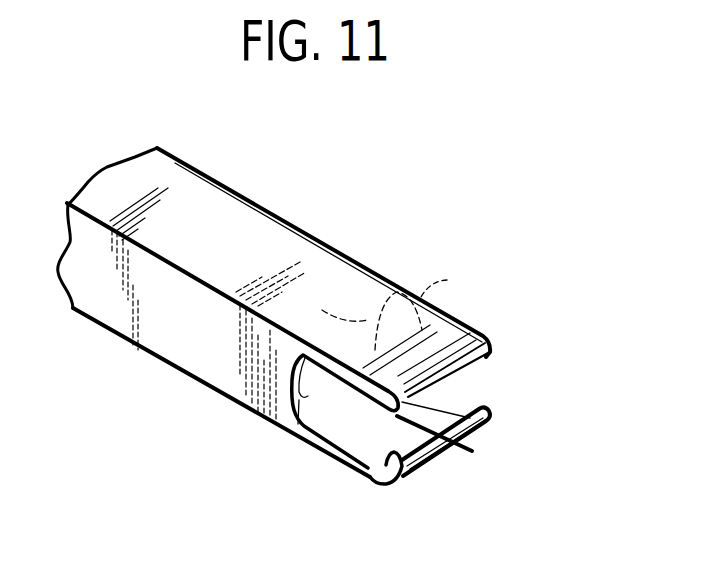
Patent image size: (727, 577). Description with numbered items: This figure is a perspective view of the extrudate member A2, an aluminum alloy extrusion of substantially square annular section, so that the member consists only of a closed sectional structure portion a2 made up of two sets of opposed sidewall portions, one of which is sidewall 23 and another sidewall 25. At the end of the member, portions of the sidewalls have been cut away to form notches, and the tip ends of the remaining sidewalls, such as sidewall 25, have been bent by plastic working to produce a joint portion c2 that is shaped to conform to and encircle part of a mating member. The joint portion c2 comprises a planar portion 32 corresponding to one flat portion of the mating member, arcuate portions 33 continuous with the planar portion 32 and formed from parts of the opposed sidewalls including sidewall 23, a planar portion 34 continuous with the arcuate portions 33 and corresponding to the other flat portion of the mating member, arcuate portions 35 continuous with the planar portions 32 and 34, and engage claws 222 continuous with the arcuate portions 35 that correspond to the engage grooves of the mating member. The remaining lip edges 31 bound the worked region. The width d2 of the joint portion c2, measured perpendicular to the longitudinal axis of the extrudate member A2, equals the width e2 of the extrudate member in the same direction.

The sidewall portion 25 is at (189, 186).
The sidewall portion 23 is at (192, 363).
The arcuate portions 33 is at (280, 372).
The lip portions 31 is at (247, 440).
The planar portion 32 is at (395, 313).
The planar portion 34 is at (313, 448).
The arcuate portions 35 is at (463, 447).
The engage claws 222 is at (375, 478).
The extrudate member A2 is at (285, 203).
The width of the extrudate member e2 is at (233, 197).
The width of the joint portion d2 is at (433, 340).
The closed sectional structure portion a2 is at (137, 351).
The joint portion c2 is at (333, 484).